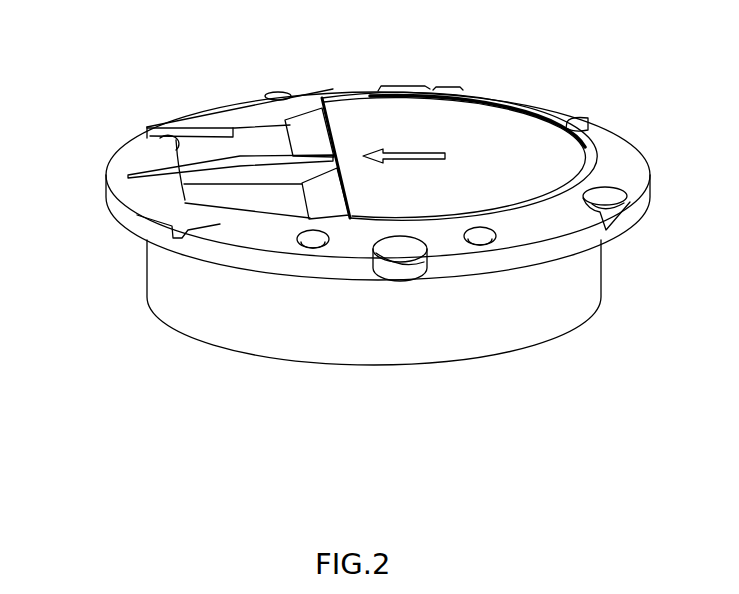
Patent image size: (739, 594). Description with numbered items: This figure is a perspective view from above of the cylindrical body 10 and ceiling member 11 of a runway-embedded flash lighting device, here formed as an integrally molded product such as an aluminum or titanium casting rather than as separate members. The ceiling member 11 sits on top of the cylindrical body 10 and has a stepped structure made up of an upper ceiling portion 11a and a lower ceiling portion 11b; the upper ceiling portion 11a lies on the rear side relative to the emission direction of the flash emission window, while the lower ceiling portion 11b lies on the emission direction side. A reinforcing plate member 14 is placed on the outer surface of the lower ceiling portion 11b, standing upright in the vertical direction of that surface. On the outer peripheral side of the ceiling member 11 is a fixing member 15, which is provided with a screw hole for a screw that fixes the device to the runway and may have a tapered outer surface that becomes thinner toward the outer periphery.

The cylindrical body 10 is at (585, 268).
The ceiling member 11 is at (369, 150).
The upper ceiling portion 11a is at (522, 108).
The lower ceiling portion 11b is at (253, 143).
The reinforcing plate member 14 is at (108, 203).
The fixing member 15 is at (612, 207).